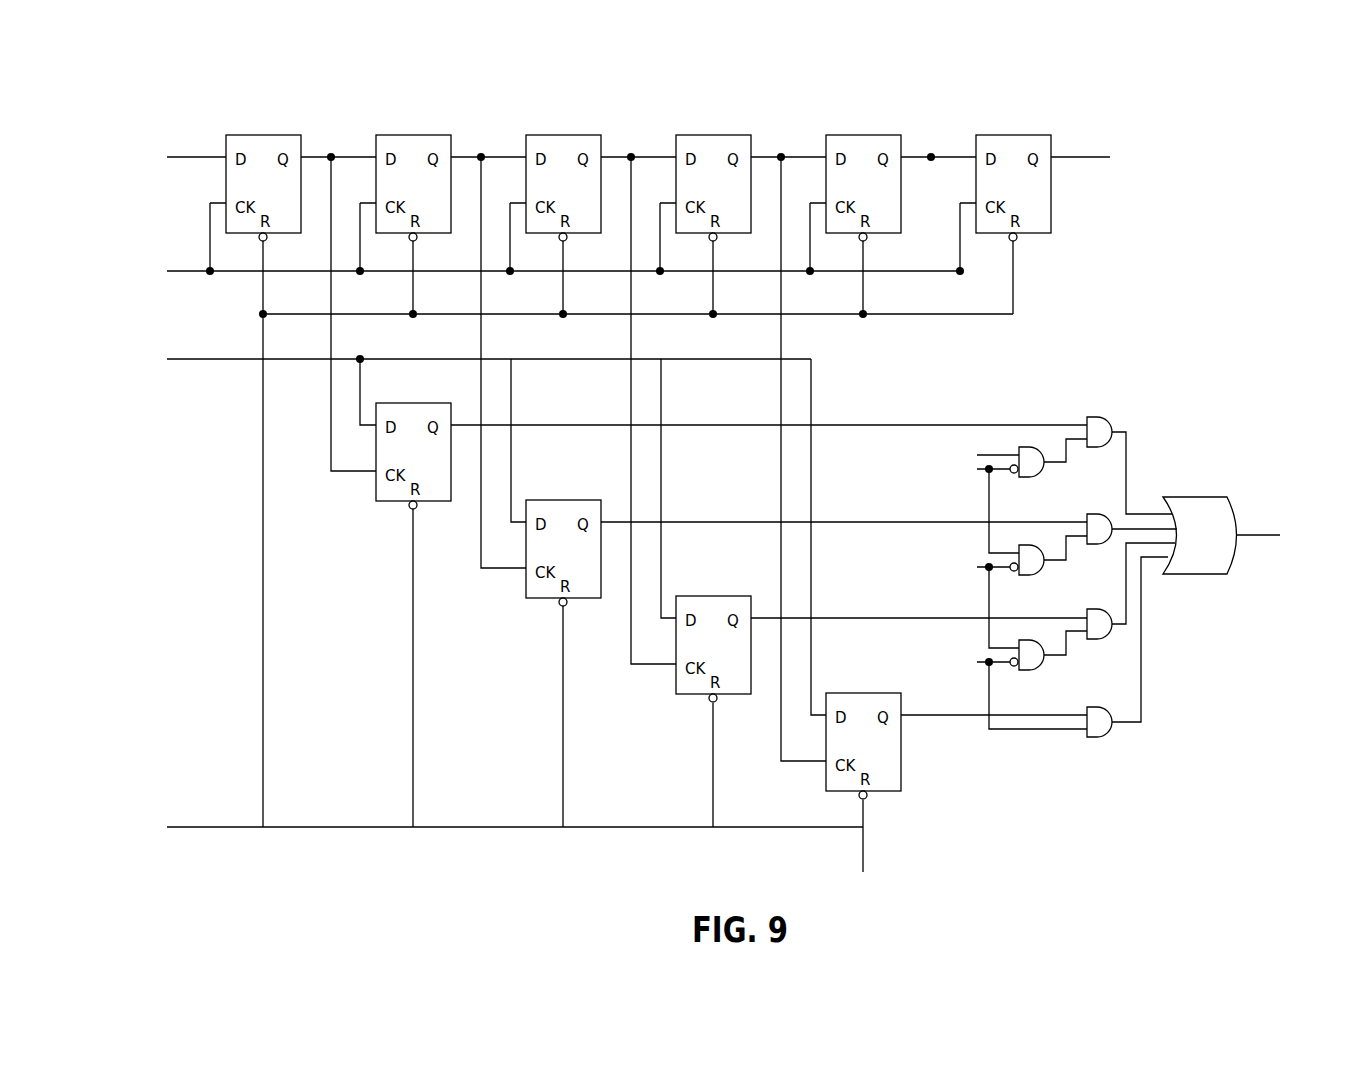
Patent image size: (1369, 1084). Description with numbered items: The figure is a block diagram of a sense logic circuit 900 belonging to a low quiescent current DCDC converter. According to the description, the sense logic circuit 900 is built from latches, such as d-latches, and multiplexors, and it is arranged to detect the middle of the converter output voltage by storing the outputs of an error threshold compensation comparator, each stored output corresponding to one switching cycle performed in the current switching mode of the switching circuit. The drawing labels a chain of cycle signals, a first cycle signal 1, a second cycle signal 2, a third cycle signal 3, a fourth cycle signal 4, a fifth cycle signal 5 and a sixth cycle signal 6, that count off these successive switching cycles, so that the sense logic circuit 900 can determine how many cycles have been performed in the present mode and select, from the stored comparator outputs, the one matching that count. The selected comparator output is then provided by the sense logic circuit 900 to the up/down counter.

The sense logic circuit 900 is at (183, 115).
The vcyc1 flip-flop output net 1 is at (338, 303).
The vcyc2 flip-flop output net 2 is at (488, 352).
The vcyc3 flip-flop output net 3 is at (638, 400).
The vcyc4 flip-flop output net 4 is at (788, 448).
The vcyc5 flip-flop output net 5 is at (938, 148).
The vcyc6 flip-flop output net 6 is at (1080, 146).